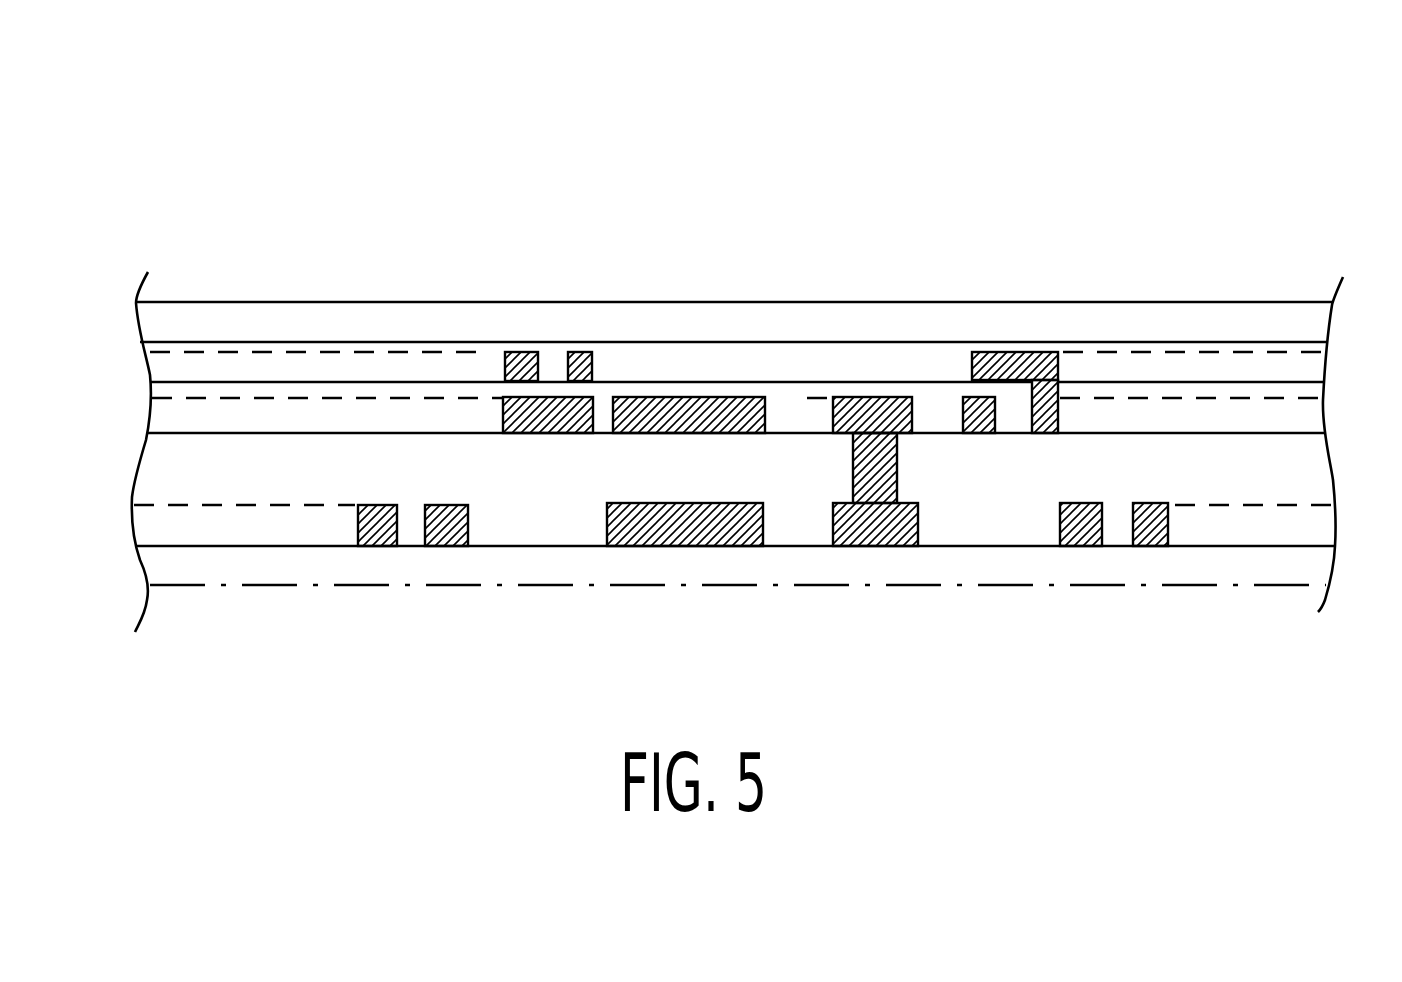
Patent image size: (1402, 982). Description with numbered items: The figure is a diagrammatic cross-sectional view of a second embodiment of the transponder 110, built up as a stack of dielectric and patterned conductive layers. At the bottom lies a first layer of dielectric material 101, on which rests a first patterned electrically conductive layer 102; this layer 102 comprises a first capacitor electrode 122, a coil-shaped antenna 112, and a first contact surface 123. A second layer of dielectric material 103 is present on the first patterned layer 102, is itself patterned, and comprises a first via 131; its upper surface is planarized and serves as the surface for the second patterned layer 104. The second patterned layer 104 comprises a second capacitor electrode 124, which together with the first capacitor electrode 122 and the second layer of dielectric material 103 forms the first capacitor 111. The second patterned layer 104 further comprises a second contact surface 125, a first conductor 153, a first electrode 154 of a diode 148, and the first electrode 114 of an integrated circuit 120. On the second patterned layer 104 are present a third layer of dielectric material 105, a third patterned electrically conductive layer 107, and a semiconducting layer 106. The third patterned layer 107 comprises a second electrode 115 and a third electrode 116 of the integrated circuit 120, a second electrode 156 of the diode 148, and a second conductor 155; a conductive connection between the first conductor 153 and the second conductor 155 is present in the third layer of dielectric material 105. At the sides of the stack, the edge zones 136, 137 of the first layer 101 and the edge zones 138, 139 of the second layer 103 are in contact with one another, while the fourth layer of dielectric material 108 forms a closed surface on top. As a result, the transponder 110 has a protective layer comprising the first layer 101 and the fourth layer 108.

The transponder 110 is at (1318, 236).
The first layer of dielectric material 101 is at (1278, 565).
The first patterned electrically conductive layer 102 is at (170, 527).
The second layer of dielectric material 103 is at (1297, 460).
The second patterned layer 104 is at (165, 418).
The third layer of dielectric material 105 is at (1305, 390).
The semiconducting layer 106 is at (1305, 345).
The third patterned electrically conductive layer 107 is at (170, 362).
The fourth layer of dielectric material 108 is at (1302, 312).
The first capacitor 111 is at (772, 387).
The coil-shaped antenna 112 is at (432, 546).
The first electrode of the integrated circuit 114 is at (503, 416).
The second electrode of the IC 115 is at (505, 352).
The third electrode of the IC 116 is at (592, 352).
The integrated circuit 120 is at (550, 350).
The first capacitor electrode 122 is at (645, 546).
The first contact surface 123 is at (870, 546).
The second capacitor electrode 124 is at (688, 397).
The second contact surface 125 is at (872, 397).
The first via 131 is at (897, 434).
The edge zone of the first layer 136 is at (1253, 560).
The edge zone of the first layer 137 is at (178, 568).
The edge zone of the second layer 138 is at (1220, 482).
The edge zone of the second layer 139 is at (210, 493).
The diode 148 is at (1029, 331).
The first conductor 153 is at (1045, 433).
The first electrode of diode 154 is at (980, 433).
The second conductor 155 is at (1053, 348).
The second electrode of the diode 156 is at (1000, 352).